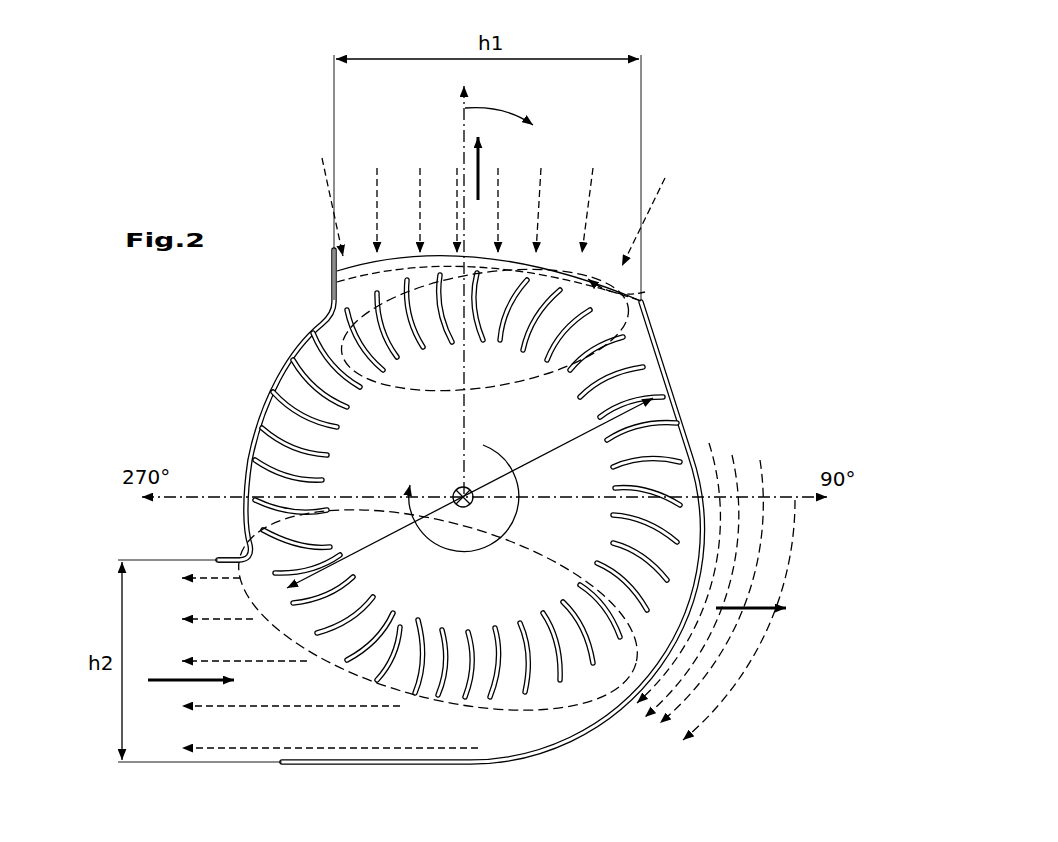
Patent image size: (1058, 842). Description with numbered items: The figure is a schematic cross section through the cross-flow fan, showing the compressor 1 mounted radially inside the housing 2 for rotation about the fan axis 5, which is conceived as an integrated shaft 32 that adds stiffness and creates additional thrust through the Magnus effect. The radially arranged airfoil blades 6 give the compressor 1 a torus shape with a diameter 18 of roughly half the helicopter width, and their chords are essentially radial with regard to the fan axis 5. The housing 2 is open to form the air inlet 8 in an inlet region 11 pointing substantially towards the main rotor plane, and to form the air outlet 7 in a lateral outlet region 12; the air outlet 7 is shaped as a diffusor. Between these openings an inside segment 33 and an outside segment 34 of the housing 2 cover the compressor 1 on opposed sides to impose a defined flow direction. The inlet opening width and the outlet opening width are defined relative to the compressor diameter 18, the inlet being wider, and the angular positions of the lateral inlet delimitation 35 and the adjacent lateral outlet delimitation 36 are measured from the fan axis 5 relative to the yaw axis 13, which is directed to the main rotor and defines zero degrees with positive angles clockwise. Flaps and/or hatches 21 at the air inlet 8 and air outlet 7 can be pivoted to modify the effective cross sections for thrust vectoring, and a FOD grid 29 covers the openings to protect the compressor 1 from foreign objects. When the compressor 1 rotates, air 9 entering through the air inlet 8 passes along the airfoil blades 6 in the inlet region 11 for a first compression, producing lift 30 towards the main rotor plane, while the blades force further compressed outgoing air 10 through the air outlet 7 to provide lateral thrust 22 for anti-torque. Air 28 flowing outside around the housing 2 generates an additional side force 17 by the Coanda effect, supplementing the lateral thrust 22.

The compressor 1 is at (295, 379).
The housing 2 is at (310, 325).
The fan axis 5 is at (462, 487).
The airfoil blades 6 is at (611, 540).
The air outlet 7 is at (278, 683).
The air inlet 8 is at (645, 288).
The air 9 is at (325, 186).
The outgoing air 10 is at (202, 575).
The inlet region 11 is at (365, 303).
The outlet region 12 is at (543, 713).
The yaw axis 13 is at (462, 122).
The additional side force 17 is at (782, 610).
The diameter 18 is at (556, 445).
The flaps and/or hatches 21 is at (350, 763).
The lateral thrust 22 is at (170, 684).
The air 28 is at (716, 734).
The FOD grid 29 is at (363, 270).
The lift 30 is at (476, 158).
The integrated shaft 32 is at (463, 555).
The inside segment 33 is at (246, 455).
The outside segment 34 is at (683, 413).
The lateral inlet delimitation 35 is at (336, 272).
The lateral outlet delimitation 36 is at (236, 556).